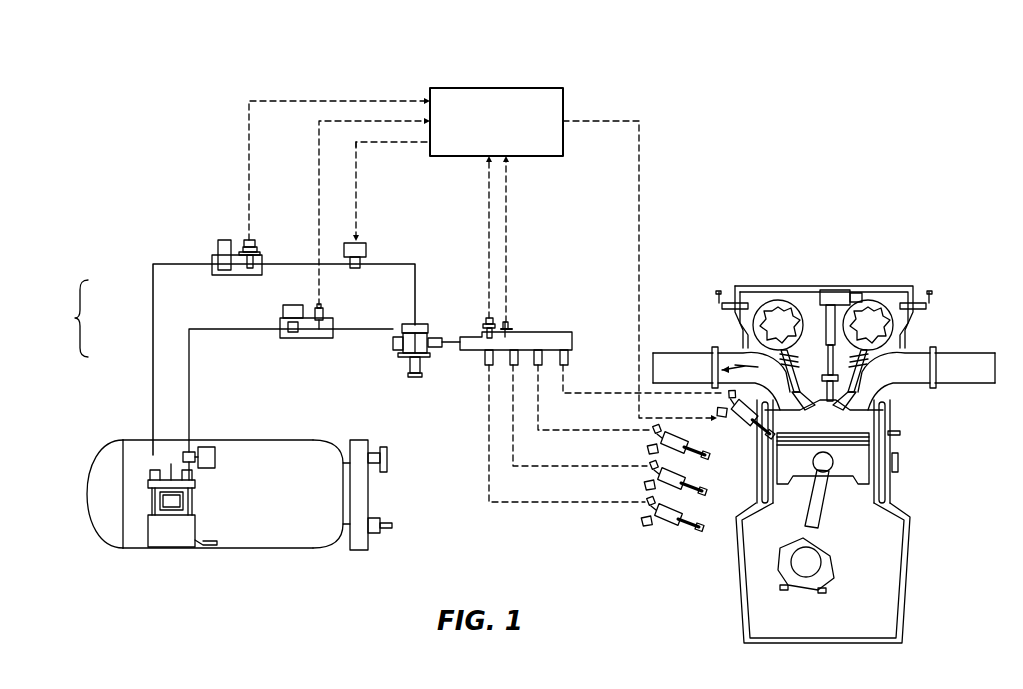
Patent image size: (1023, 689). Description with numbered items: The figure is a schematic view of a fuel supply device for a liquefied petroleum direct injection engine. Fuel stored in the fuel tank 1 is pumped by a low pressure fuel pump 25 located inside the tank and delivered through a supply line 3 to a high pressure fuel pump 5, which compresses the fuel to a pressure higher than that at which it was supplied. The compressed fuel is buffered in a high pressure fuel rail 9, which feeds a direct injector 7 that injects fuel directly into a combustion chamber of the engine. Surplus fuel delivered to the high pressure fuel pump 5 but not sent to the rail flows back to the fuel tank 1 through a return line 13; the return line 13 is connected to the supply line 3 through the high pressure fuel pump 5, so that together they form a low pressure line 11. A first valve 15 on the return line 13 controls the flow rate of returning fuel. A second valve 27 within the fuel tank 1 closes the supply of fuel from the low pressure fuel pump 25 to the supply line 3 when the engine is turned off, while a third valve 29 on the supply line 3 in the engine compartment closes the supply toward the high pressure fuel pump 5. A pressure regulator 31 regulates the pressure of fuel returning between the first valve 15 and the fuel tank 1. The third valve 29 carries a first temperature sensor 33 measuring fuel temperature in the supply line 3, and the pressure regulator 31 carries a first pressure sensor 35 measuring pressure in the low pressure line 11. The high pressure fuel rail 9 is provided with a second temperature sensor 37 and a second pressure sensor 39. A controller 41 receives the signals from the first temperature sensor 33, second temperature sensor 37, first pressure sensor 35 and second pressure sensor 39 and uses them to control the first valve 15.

The fuel tank 1 is at (107, 453).
The supply line 3 is at (189, 351).
The high pressure fuel pump 5 is at (422, 360).
The direct injector 7 is at (650, 450).
The high pressure fuel rail 9 is at (555, 332).
The low pressure line 11 is at (72, 318).
The return line 13 is at (153, 280).
The first valve 15 is at (364, 243).
The low pressure fuel pump 25 is at (170, 548).
The second valve 27 is at (207, 452).
The third valve 29 is at (293, 305).
The pressure regulator 31 is at (222, 248).
The first temperature sensor 33 is at (320, 322).
The first pressure sensor 35 is at (244, 240).
The second temperature sensor 37 is at (510, 322).
The second pressure sensor 39 is at (486, 318).
The controller 41 is at (540, 88).